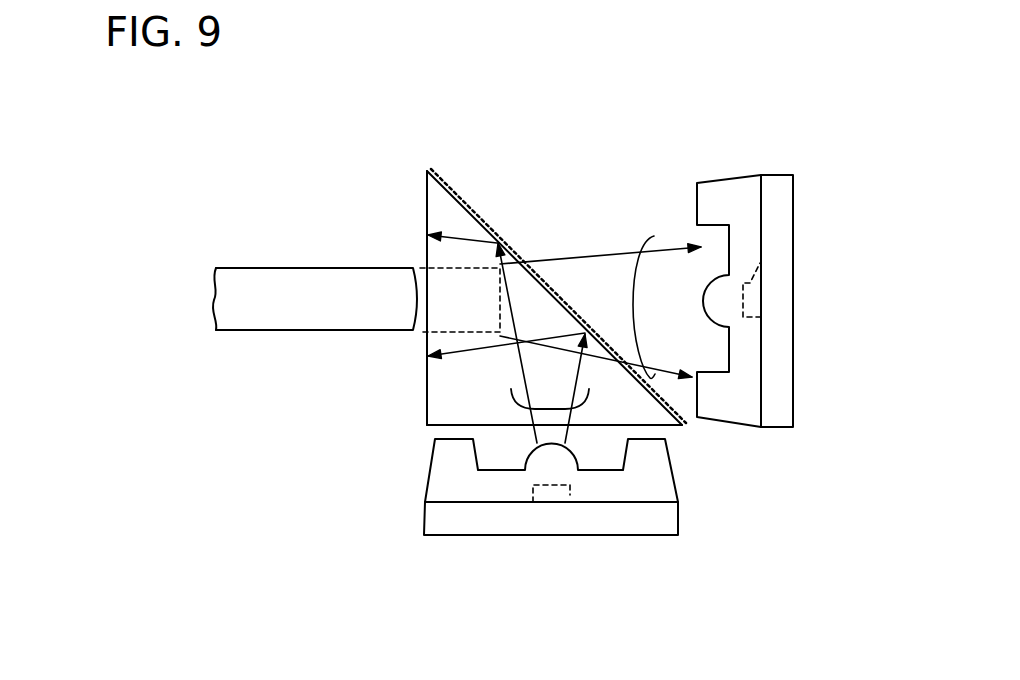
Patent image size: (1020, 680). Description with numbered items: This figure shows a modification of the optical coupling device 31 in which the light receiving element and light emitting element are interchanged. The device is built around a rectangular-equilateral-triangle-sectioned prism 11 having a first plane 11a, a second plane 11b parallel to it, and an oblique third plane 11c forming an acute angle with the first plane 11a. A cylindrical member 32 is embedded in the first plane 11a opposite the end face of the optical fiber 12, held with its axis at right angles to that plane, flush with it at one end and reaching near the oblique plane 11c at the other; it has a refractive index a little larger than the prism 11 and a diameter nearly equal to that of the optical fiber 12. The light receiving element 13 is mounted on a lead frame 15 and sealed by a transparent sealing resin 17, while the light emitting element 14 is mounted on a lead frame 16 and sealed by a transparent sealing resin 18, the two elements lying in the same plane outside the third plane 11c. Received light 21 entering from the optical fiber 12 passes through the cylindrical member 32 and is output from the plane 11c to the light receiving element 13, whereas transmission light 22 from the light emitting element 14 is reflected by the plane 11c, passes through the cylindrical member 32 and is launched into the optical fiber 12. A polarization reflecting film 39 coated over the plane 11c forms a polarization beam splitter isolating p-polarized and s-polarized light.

The prism 11 is at (508, 301).
The first plane 11a is at (425, 212).
The second plane 11b is at (425, 435).
The third plane 11c is at (476, 219).
The optical fiber 12 is at (277, 268).
The light receiving element 13 is at (760, 263).
The light emitting element 14 is at (570, 495).
The lead frame 15 is at (778, 175).
The lead frame 16 is at (680, 515).
The transparent sealing resin 17 is at (738, 177).
The transparent sealing resin 18 is at (680, 472).
The received light 21 is at (648, 228).
The transmission light 22 is at (592, 398).
The optical coupling device 31 is at (462, 178).
The cylindrical member 32 is at (462, 320).
The polarization reflecting film 39 is at (461, 198).